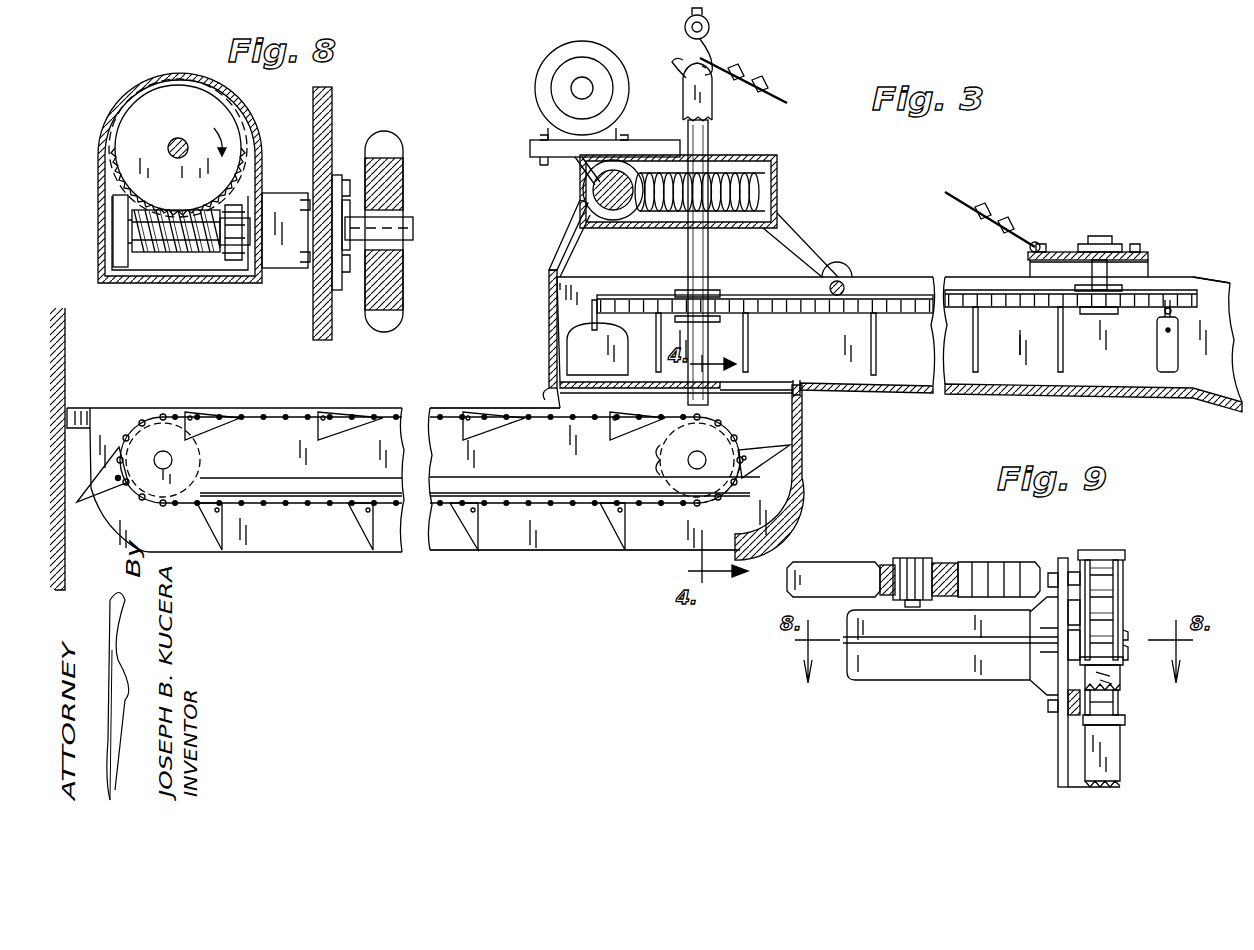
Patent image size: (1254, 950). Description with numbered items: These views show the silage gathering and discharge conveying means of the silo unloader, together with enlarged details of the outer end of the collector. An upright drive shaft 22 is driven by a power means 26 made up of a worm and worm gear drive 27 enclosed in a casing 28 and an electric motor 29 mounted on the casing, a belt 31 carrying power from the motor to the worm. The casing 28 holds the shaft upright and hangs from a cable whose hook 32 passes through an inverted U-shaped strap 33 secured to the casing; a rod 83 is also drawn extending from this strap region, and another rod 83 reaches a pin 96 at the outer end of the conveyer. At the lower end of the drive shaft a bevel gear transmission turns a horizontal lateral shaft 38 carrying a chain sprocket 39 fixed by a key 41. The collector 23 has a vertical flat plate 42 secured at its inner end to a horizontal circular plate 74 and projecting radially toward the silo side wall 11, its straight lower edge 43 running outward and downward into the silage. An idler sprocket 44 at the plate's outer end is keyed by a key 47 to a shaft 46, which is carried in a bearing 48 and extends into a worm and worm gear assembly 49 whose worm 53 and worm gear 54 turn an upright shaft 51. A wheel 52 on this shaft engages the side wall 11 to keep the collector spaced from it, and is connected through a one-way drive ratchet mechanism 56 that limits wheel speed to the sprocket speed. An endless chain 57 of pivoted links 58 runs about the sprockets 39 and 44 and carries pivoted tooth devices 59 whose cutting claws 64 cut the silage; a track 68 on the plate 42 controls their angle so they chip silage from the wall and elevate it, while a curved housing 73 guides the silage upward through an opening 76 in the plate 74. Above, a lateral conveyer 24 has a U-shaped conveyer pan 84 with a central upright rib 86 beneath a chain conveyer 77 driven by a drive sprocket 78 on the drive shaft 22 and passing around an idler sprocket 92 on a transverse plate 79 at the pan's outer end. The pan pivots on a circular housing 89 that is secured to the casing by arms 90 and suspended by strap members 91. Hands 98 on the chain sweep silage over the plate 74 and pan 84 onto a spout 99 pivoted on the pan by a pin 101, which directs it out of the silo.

In FIG. 3, the side wall 11 is at (68, 342).
In FIG. 3, the drive shaft 22 is at (688, 142).
In FIG. 3, the collector 23 is at (408, 388).
In FIG. 3, the lateral conveyer 24 is at (893, 232).
In FIG. 3, the power means 26 is at (569, 186).
In FIG. 3, the worm and worm gear drive 27 is at (732, 185).
In FIG. 3, the casing 28 is at (777, 192).
In FIG. 3, the electric motor 29 is at (546, 74).
In FIG. 3, the belt 31 is at (575, 162).
In FIG. 3, the hook 32 is at (716, 45).
In FIG. 3, the inverted U-shaped strap 33 is at (683, 104).
In FIG. 3, the lateral shaft 38 is at (688, 458).
In FIG. 3, the chain sprocket 39 is at (714, 482).
In FIG. 3, the key 41 is at (699, 452).
In FIG. 8, the flat plate 42 is at (332, 102).
In FIG. 3, the flat plate 42 is at (532, 407).
In FIG. 9, the flat plate 42 is at (1062, 745).
In FIG. 3, the lower edge 43 is at (530, 552).
In FIG. 8, the idler sprocket 44 is at (397, 163).
In FIG. 3, the idler sprocket 44 is at (163, 445).
In FIG. 9, the idler sprocket 44 is at (1112, 603).
In FIG. 8, the shaft 46 is at (413, 232).
In FIG. 9, the shaft 46 is at (1128, 640).
In FIG. 8, the key 47 is at (402, 217).
In FIG. 8, the bearing 48 is at (338, 175).
In FIG. 8, the worm and worm gear assembly 49 is at (108, 108).
In FIG. 9, the worm and worm gear assembly 49 is at (866, 672).
In FIG. 8, the shaft 51 is at (178, 138).
In FIG. 9, the shaft 51 is at (905, 558).
In FIG. 3, the wheel 52 is at (88, 405).
In FIG. 9, the wheel 52 is at (1000, 562).
In FIG. 8, the worm 53 is at (142, 255).
In FIG. 8, the worm gear 54 is at (150, 102).
In FIG. 9, the one-way drive ratchet mechanism 56 is at (940, 565).
In FIG. 3, the endless chain 57 is at (440, 400).
In FIG. 9, the endless chain 57 is at (1142, 700).
In FIG. 3, the links 58 is at (305, 413).
In FIG. 3, the tooth devices 59 is at (622, 532).
In FIG. 9, the tooth devices 59 is at (1120, 550).
In FIG. 9, the cutting claws 64 is at (1095, 787).
In FIG. 3, the track 68 is at (514, 480).
In FIG. 9, the track 68 is at (1058, 722).
In FIG. 3, the curved housing 73 is at (805, 458).
In FIG. 3, the horizontal circular plate 74 is at (805, 392).
In FIG. 3, the opening 76 is at (772, 385).
In FIG. 3, the chain conveyer 77 is at (620, 292).
In FIG. 3, the drive sprocket 78 is at (715, 292).
In FIG. 3, the transverse plate 79 is at (1062, 252).
In FIG. 3, the rod 83 is at (780, 92).
In FIG. 3, the conveyer pan 84 is at (1052, 394).
In FIG. 3, the upright rib 86 is at (993, 388).
In FIG. 3, the circular housing 89 is at (548, 312).
In FIG. 3, the arms 90 is at (798, 235).
In FIG. 3, the strap members 91 is at (556, 242).
In FIG. 3, the idler sprocket 92 is at (1110, 268).
In FIG. 3, the pin 96 is at (1035, 242).
In FIG. 3, the hands 98 is at (585, 350).
In FIG. 3, the spout 99 is at (1218, 285).
In FIG. 3, the pin 101 is at (1168, 300).